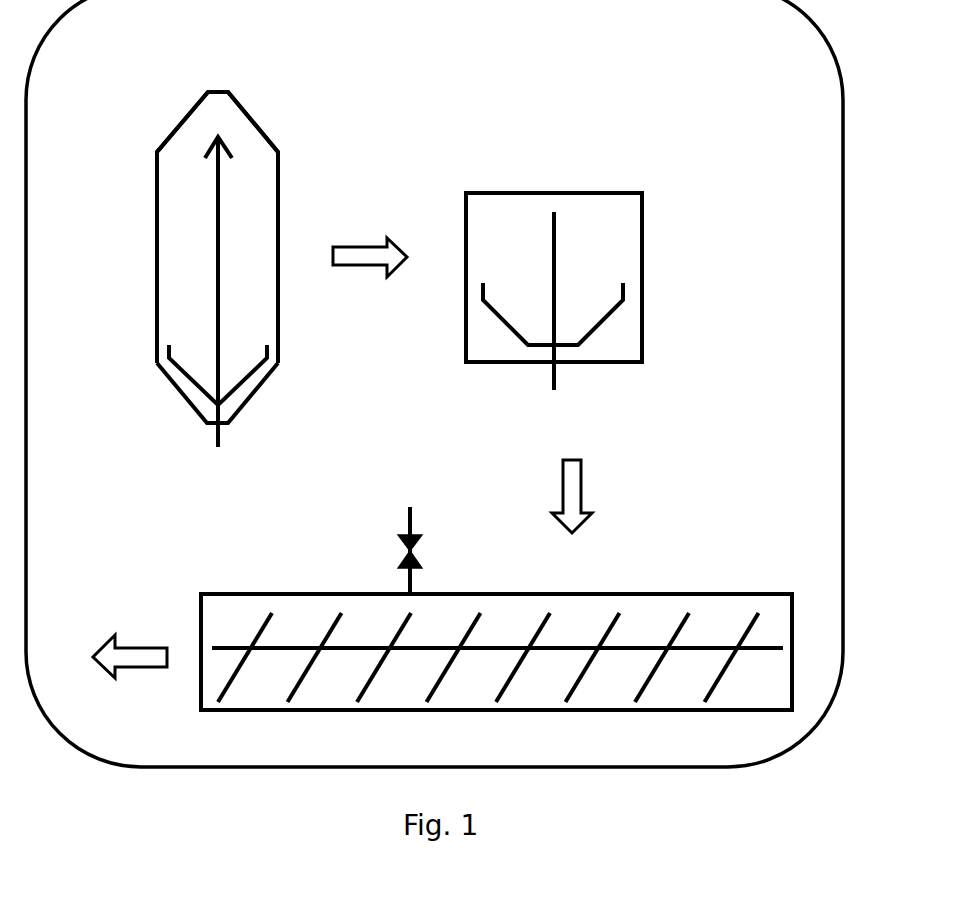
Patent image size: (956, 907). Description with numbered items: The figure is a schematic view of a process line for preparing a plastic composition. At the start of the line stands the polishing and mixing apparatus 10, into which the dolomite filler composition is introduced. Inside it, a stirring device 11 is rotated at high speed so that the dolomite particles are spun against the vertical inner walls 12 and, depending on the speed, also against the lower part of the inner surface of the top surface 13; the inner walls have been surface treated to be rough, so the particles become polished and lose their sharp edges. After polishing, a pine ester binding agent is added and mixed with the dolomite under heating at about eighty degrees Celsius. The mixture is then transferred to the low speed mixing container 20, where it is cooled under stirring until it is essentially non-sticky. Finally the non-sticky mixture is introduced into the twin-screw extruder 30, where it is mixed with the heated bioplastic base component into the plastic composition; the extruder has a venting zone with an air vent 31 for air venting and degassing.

The polishing and mixing apparatus 10 is at (245, 202).
The stirring device 11 is at (188, 375).
The vertical inner walls 12 is at (167, 238).
The top surface 13 is at (253, 122).
The low speed mixing container 20 is at (607, 247).
The twin-screw extruder 30 is at (537, 608).
The air vent 31 is at (417, 538).